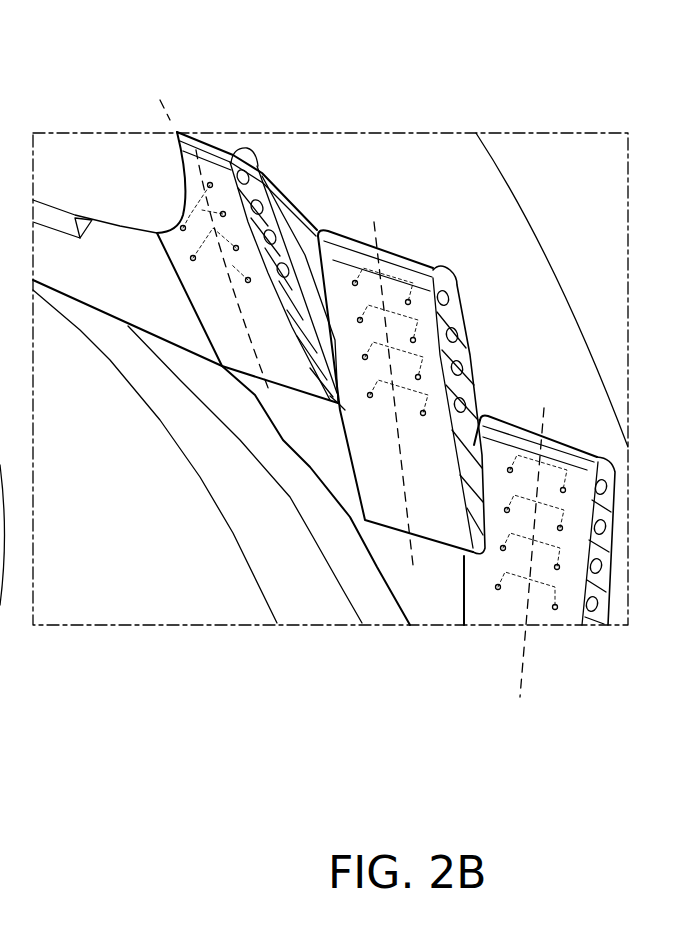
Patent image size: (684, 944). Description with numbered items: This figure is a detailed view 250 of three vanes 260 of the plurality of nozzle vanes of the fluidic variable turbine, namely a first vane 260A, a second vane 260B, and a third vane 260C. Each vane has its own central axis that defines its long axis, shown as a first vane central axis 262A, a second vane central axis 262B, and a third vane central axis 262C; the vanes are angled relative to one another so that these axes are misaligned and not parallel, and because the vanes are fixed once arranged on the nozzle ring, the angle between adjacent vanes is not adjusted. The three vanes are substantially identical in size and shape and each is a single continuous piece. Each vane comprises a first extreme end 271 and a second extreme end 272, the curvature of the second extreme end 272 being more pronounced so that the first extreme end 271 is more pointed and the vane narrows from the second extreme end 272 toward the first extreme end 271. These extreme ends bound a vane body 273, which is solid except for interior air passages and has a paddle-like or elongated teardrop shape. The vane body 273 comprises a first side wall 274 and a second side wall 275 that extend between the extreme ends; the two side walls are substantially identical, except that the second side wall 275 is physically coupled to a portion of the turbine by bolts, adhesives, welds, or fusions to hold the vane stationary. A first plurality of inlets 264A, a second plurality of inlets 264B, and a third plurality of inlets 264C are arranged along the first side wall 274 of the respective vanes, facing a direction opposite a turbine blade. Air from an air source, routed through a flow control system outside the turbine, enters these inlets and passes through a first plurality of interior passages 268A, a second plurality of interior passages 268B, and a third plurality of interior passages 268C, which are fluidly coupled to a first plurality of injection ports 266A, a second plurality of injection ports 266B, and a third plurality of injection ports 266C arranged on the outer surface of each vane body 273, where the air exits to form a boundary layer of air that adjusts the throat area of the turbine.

The detailed view 250 is at (540, 65).
The vanes 260 is at (510, 228).
The first vane 260A is at (222, 366).
The second vane 260B is at (365, 525).
The third vane 260C is at (555, 433).
The first vane central axis 262A is at (167, 128).
The second vane central axis 262B is at (378, 237).
The third vane central axis 262C is at (545, 440).
The first plurality of inlets 264A is at (263, 205).
The second plurality of inlets 264B is at (462, 323).
The third plurality of inlets 264C is at (590, 624).
The first plurality of injection ports 266A is at (196, 266).
The second plurality of injection ports 266B is at (375, 405).
The third plurality of injection ports 266C is at (502, 600).
The first plurality of interior passages 268A is at (192, 140).
The second plurality of interior passages 268B is at (403, 270).
The third plurality of interior passages 268C is at (568, 460).
The first extreme end 271 is at (338, 404).
The second extreme end 272 is at (233, 150).
The vane body 273 is at (232, 316).
The first side wall 274 is at (302, 287).
The second side wall 275 is at (150, 240).